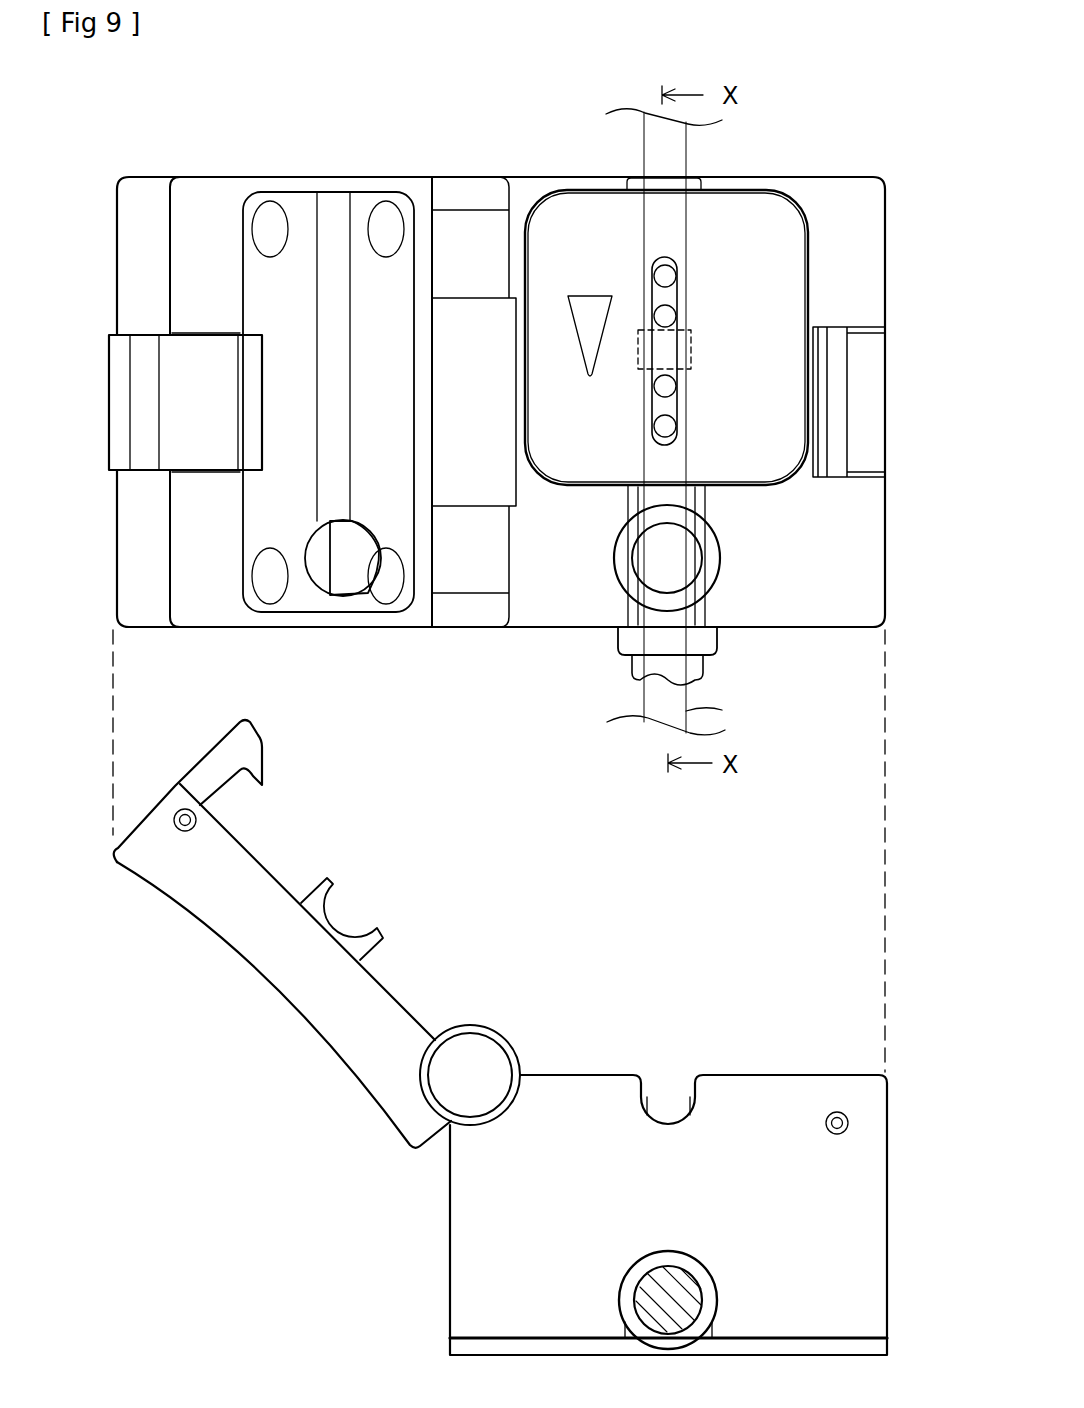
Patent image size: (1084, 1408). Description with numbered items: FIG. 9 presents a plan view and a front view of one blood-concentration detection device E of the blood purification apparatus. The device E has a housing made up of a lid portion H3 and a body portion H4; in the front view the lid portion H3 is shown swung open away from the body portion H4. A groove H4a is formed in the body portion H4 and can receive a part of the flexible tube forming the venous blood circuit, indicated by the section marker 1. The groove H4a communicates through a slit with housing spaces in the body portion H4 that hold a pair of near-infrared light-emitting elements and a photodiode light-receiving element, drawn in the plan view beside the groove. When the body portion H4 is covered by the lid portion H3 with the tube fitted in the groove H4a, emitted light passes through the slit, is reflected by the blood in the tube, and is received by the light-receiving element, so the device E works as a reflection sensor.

The blood-concentration detection device E is at (170, 160).
The lid portion H3 is at (130, 231).
The body portion H4 is at (860, 550).
The groove H4a is at (655, 617).
The shaft / section reference 1 is at (715, 712).